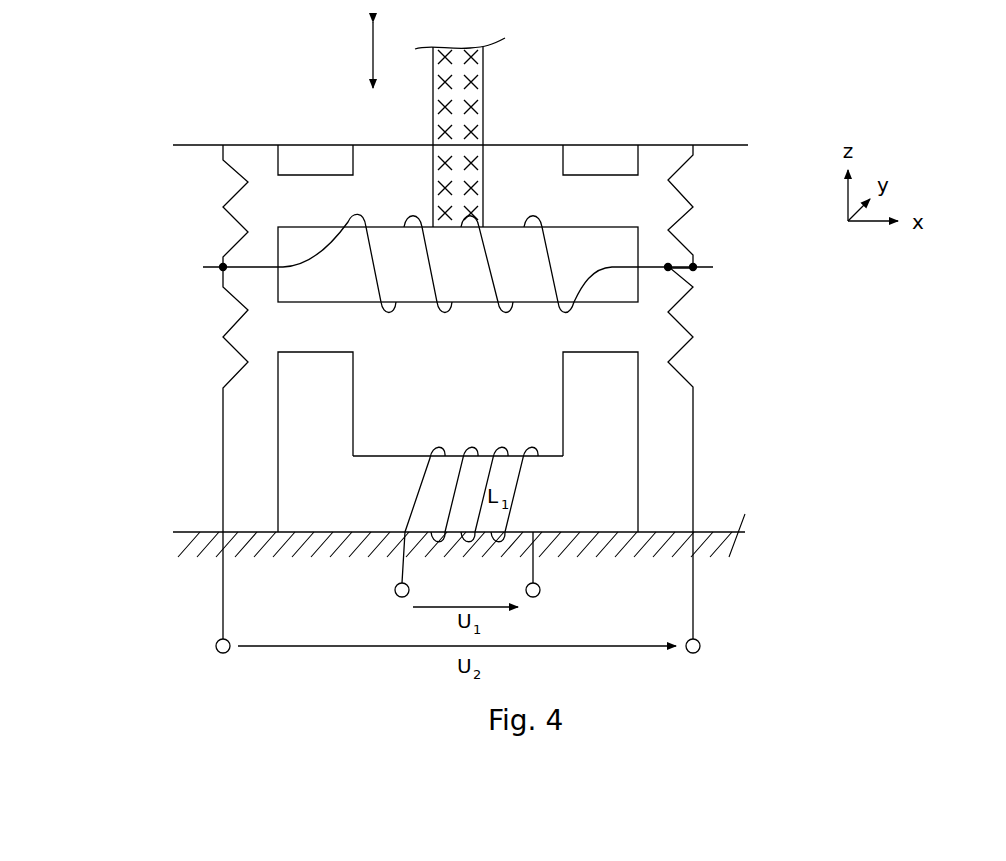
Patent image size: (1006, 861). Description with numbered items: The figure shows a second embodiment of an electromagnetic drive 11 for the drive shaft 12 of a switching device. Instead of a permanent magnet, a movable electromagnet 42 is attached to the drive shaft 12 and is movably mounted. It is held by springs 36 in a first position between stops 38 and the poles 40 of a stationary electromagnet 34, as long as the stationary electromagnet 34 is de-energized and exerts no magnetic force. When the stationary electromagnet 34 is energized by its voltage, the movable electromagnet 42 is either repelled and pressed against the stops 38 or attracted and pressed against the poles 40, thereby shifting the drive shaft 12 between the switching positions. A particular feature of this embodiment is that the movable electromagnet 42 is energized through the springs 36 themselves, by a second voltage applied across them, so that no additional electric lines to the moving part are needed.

The electromagnetic drive 11 is at (856, 338).
The drive shaft 12 is at (478, 97).
The stationary electromagnet 34 is at (487, 452).
The springs 36 is at (210, 197).
The stops 38 is at (298, 155).
The poles 40 is at (297, 377).
The movable electromagnet 42 is at (473, 289).